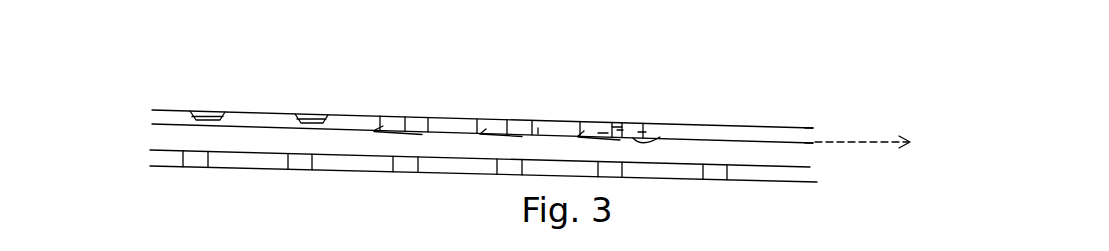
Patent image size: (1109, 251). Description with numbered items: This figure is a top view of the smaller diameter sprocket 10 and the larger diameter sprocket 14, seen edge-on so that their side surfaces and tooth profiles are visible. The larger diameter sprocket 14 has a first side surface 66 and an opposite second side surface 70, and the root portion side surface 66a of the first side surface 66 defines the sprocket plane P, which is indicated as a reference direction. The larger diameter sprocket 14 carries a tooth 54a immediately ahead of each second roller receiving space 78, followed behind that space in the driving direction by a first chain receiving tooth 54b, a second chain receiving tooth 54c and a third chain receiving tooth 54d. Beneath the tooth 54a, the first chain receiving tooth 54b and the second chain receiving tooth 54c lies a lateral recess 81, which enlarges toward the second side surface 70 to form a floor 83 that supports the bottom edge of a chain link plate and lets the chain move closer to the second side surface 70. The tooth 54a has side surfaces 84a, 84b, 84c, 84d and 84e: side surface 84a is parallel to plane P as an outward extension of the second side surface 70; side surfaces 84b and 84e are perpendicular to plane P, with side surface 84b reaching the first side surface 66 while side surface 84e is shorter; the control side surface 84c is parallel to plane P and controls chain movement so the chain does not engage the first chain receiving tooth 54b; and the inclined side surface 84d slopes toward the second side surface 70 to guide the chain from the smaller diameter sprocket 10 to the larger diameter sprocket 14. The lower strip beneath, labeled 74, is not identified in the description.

The smaller diameter sprocket 10 is at (165, 157).
The larger diameter sprocket 14 is at (176, 118).
The tooth 54a is at (632, 130).
The first chain receiving tooth 54b is at (517, 125).
The second chain receiving tooth 54c is at (417, 120).
The third chain receiving tooth 54d is at (313, 114).
The first side surface 66 is at (164, 126).
The root portion side surface 66a is at (793, 143).
The second side surface 70 is at (163, 109).
The base layer 74 is at (794, 172).
The second roller receiving space 78 is at (540, 131).
The lateral recess 81 is at (380, 121).
The floor 83 is at (375, 130).
The side surface 84a is at (617, 127).
The side surface 84b is at (642, 132).
The control side surface 84c is at (660, 137).
The inclined side surface 84d is at (620, 130).
The side surface 84e is at (603, 133).
The sprocket plane P is at (845, 140).